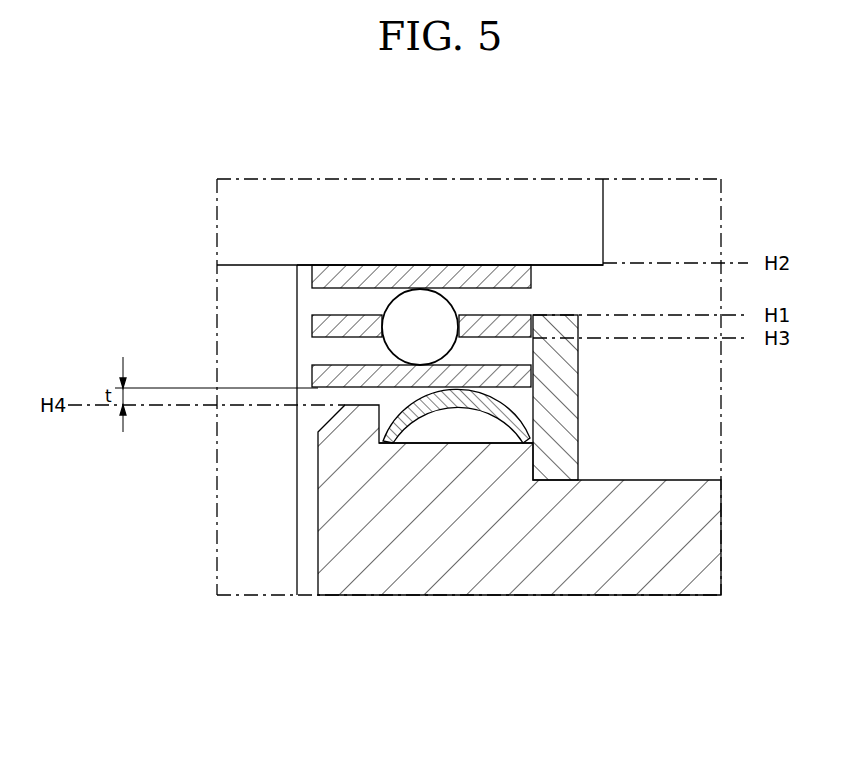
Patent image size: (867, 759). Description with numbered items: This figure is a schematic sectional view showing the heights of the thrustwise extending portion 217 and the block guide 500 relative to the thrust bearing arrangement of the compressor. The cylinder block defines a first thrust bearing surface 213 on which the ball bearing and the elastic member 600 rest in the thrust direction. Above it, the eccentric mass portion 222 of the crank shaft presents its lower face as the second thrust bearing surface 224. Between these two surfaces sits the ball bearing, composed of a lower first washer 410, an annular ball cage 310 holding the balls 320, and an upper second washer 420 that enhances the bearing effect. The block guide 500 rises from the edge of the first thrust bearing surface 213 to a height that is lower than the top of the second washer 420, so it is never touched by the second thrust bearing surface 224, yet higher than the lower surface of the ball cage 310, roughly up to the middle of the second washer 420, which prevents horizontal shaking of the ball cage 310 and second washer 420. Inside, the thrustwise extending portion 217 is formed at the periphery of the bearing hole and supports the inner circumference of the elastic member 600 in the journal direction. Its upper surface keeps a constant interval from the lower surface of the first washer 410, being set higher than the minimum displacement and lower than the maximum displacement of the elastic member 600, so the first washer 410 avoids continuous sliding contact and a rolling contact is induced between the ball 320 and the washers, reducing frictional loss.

The eccentric mass portion 222 is at (529, 210).
The second thrust bearing surface 224 is at (367, 276).
The thrustwise extending portion 217 is at (365, 413).
The second washer 420 is at (315, 275).
The ball cage 310 is at (483, 320).
The ball 320 is at (417, 300).
The first washer 410 is at (320, 376).
The block guide 500 is at (556, 460).
The elastic member 600 is at (500, 415).
The first thrust bearing surface 213 is at (425, 443).